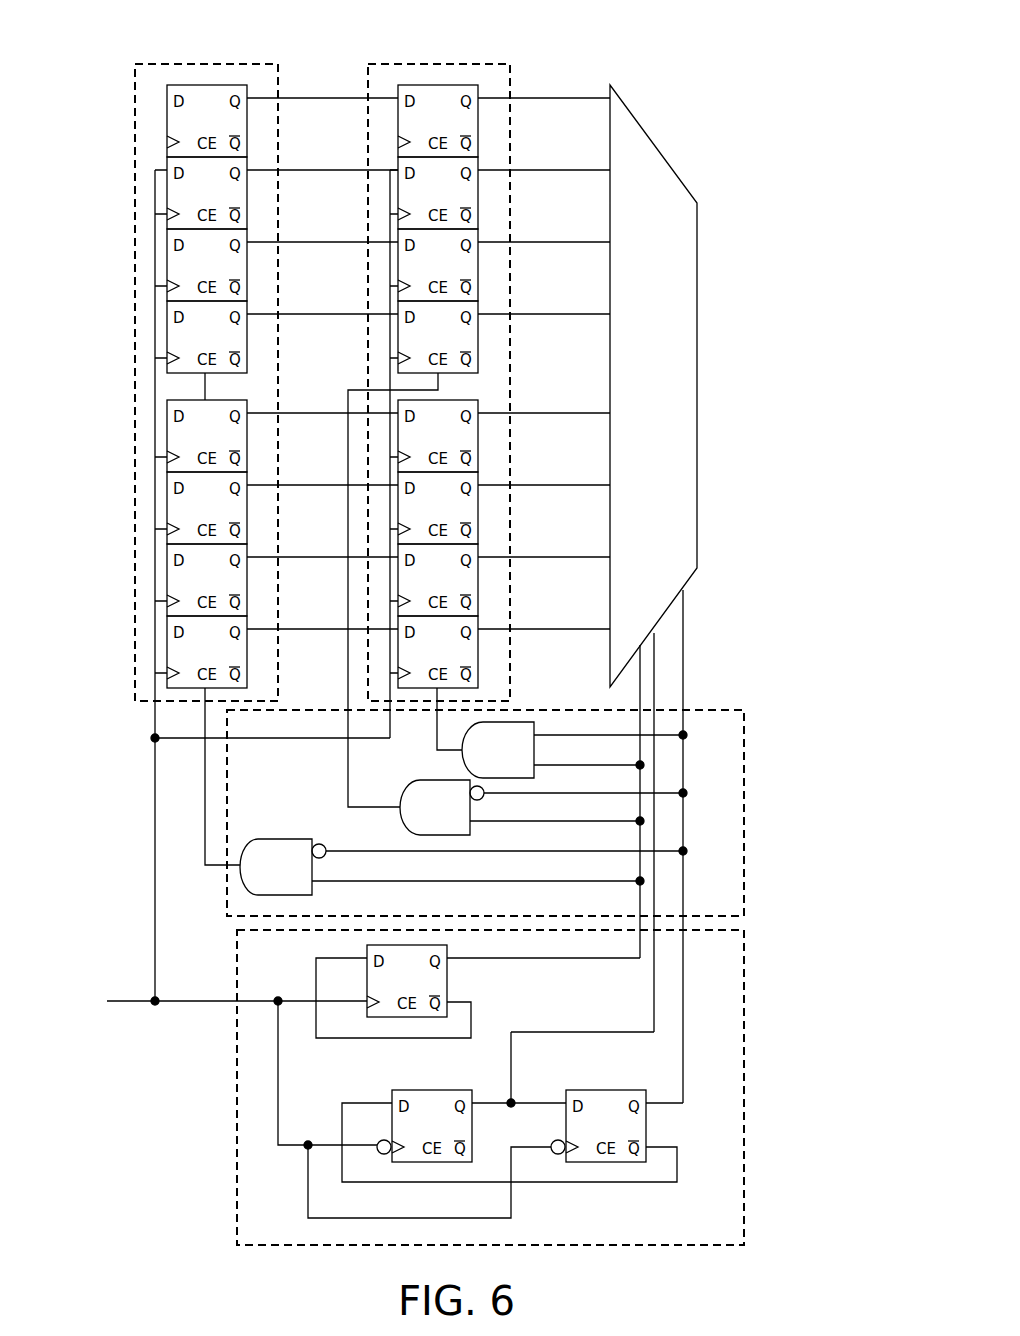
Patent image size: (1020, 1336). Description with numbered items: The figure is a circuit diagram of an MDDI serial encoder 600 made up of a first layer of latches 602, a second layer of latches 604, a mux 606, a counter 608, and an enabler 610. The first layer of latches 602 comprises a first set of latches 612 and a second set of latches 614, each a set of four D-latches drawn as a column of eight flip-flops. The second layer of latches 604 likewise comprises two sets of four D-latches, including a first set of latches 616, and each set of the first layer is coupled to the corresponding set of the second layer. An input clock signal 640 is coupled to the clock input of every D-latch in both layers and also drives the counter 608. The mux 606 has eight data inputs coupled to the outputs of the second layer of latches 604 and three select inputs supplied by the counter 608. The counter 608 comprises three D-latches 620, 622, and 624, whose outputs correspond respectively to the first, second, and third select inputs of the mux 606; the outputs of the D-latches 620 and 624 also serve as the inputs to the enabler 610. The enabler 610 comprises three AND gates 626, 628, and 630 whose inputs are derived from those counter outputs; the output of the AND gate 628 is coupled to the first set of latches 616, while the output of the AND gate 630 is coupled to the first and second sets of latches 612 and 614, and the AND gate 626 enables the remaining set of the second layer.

The MDDI serial encoder 600 is at (408, 27).
The first layer of latches 602 is at (200, 63).
The second layer of latches 604 is at (480, 62).
The mux 606 is at (697, 400).
The counter 608 is at (746, 1060).
The enabler 610 is at (746, 820).
The first set of latches 612 is at (160, 255).
The second set of latches 614 is at (160, 545).
The first set of latches 616 is at (478, 232).
The D-latch 620 is at (450, 985).
The D-latch 622 is at (432, 1162).
The D-latch 624 is at (612, 1162).
The AND gate 626 is at (462, 760).
The AND gate 628 is at (402, 823).
The AND gate 630 is at (272, 838).
The input clock signal 640 is at (127, 1005).